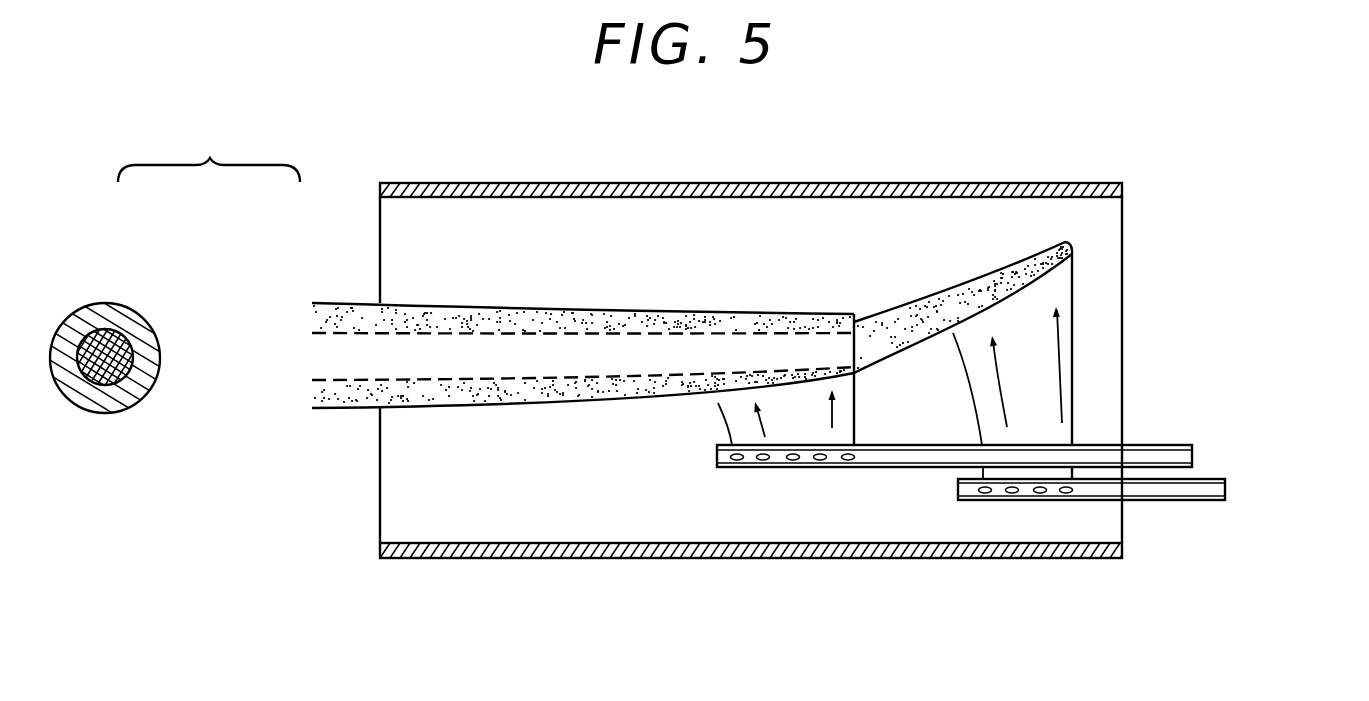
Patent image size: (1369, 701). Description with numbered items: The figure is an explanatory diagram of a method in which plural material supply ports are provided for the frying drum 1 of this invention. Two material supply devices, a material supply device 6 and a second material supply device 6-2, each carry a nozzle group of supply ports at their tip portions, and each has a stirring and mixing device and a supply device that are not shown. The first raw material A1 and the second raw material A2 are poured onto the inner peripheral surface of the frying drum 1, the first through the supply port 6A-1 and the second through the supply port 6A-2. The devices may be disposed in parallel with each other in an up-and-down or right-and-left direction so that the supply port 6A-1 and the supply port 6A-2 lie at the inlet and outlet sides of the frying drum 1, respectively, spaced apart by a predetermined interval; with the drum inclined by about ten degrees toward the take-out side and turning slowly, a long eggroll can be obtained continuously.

The frying drum 1 is at (505, 183).
The first raw material A1 is at (130, 410).
The second raw material A2 is at (107, 303).
The material supply device 6 is at (1093, 505).
The second material supply device 6-2 is at (873, 470).
The supply port 6A-1 is at (1005, 502).
The supply port 6A-2 is at (757, 470).